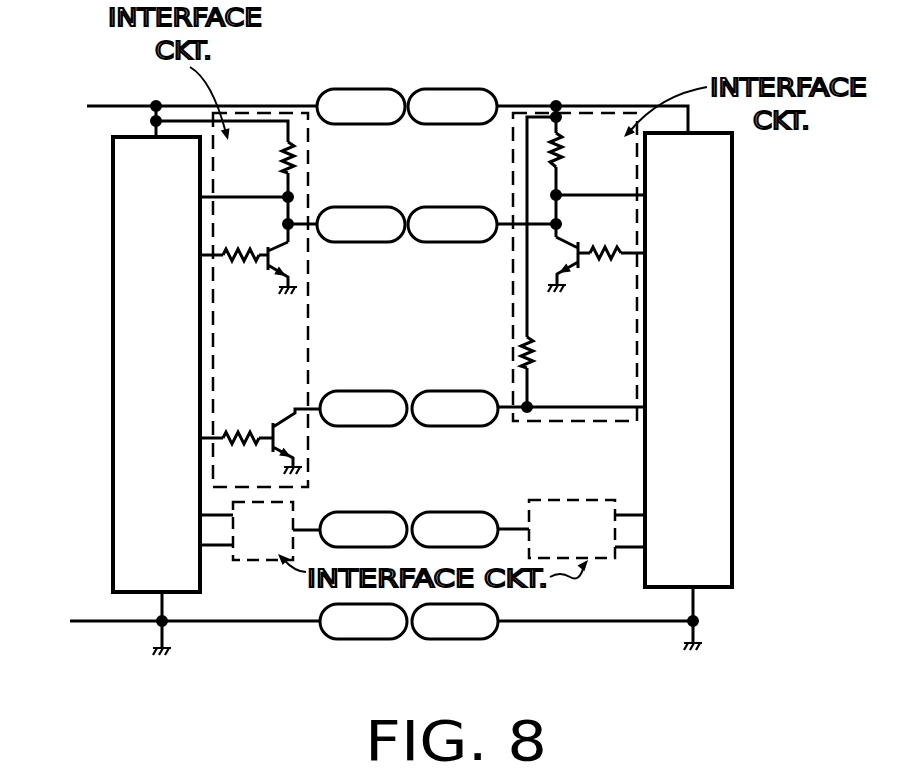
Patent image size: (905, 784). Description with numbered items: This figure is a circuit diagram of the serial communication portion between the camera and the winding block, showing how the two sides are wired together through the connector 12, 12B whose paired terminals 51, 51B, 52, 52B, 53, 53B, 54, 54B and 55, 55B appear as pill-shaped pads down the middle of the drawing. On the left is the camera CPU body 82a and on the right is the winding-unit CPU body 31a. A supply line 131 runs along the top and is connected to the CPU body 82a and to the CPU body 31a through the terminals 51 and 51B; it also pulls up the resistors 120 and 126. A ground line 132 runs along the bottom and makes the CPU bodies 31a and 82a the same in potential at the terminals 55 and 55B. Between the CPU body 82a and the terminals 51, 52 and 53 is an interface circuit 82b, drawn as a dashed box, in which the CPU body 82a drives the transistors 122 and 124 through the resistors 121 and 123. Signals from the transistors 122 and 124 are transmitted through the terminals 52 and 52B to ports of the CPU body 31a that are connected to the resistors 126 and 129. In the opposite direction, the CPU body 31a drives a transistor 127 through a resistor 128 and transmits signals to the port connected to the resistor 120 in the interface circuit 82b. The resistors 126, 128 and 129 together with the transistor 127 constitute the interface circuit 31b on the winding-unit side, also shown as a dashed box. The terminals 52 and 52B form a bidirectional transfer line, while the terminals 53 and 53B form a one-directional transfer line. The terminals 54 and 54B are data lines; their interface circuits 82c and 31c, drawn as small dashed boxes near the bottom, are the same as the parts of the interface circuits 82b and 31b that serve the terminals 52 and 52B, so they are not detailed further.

The supply line 131 is at (122, 105).
The ground line 132 is at (97, 620).
The CPU body 82a is at (128, 376).
The CPU body 31a is at (711, 386).
The interface circuit 82b is at (268, 259).
The interface circuit 31b is at (557, 230).
The interface circuit 82c is at (262, 548).
The interface circuit 31c is at (563, 522).
The connector 12 is at (436, 332).
The connector 12B is at (453, 364).
The resistor 120 is at (296, 155).
The resistor 121 is at (243, 263).
The transistor 122 is at (288, 254).
The resistor 123 is at (236, 432).
The transistor 124 is at (288, 433).
The resistor 126 is at (550, 156).
The transistor 127 is at (556, 252).
The resistor 128 is at (620, 261).
The resistor 129 is at (535, 348).
The terminal 51 is at (361, 106).
The terminal 52 is at (361, 224).
The terminal 53 is at (363, 408).
The terminal 54 is at (363, 529).
The terminal 55 is at (363, 621).
The terminal 51B is at (452, 106).
The terminal 52B is at (452, 224).
The terminal 53B is at (455, 408).
The terminal 54B is at (455, 529).
The terminal 55B is at (455, 621).